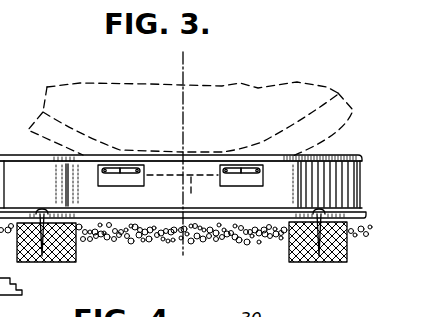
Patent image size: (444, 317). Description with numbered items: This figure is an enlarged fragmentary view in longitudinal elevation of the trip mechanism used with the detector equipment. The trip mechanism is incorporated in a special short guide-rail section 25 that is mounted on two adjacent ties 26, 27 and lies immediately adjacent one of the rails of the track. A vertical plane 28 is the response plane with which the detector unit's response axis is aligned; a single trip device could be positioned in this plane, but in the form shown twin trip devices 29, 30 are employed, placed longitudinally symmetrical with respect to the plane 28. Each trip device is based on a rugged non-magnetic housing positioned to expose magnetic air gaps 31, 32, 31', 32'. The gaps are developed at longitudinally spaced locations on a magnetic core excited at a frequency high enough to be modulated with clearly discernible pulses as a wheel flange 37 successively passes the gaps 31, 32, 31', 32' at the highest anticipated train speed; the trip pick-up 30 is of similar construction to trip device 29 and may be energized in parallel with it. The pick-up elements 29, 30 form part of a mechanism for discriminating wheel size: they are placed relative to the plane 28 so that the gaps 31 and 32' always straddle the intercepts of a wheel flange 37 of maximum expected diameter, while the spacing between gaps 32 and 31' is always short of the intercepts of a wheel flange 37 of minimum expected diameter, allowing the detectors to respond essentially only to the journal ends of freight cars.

The short guide-rail section 25 is at (173, 191).
The tie 26 is at (67, 262).
The tie 27 is at (336, 262).
The vertical plane 28 is at (187, 65).
The trip device 29 is at (119, 186).
The trip device 30 is at (246, 186).
The magnetic air gap 31 is at (109, 148).
The magnetic air gap 32 is at (138, 148).
The magnetic air gap 31' is at (228, 146).
The magnetic air gap 32' is at (260, 145).
The wheel flange 37 is at (182, 192).